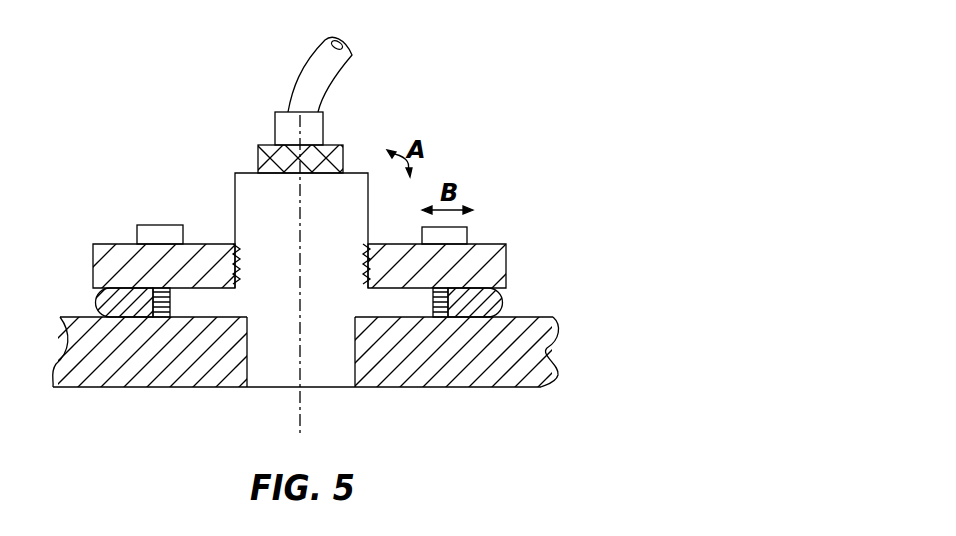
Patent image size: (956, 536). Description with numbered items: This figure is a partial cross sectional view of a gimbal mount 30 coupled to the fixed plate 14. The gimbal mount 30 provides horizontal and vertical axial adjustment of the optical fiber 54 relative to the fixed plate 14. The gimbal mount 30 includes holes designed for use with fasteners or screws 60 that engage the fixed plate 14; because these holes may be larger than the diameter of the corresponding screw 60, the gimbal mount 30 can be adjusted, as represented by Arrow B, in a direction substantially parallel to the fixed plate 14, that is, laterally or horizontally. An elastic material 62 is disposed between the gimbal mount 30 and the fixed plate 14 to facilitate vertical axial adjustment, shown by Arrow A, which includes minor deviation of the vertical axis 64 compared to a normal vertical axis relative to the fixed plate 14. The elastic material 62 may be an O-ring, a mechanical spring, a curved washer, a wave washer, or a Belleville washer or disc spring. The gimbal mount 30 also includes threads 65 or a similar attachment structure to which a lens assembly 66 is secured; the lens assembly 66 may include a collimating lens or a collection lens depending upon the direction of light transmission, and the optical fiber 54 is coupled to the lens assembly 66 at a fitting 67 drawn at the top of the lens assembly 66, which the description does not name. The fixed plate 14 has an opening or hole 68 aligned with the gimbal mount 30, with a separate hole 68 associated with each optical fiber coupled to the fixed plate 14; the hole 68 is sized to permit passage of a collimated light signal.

The fixed plate 14 is at (543, 351).
The gimbal mount 30 is at (122, 254).
The optical fiber 54 is at (322, 72).
The screws 60 is at (466, 232).
The elastic material 62 is at (488, 303).
The vertical axis 64 is at (303, 423).
The threads 65 is at (237, 249).
The lens assembly 66 is at (256, 198).
The nut 67 is at (343, 147).
The hole 68 is at (280, 365).